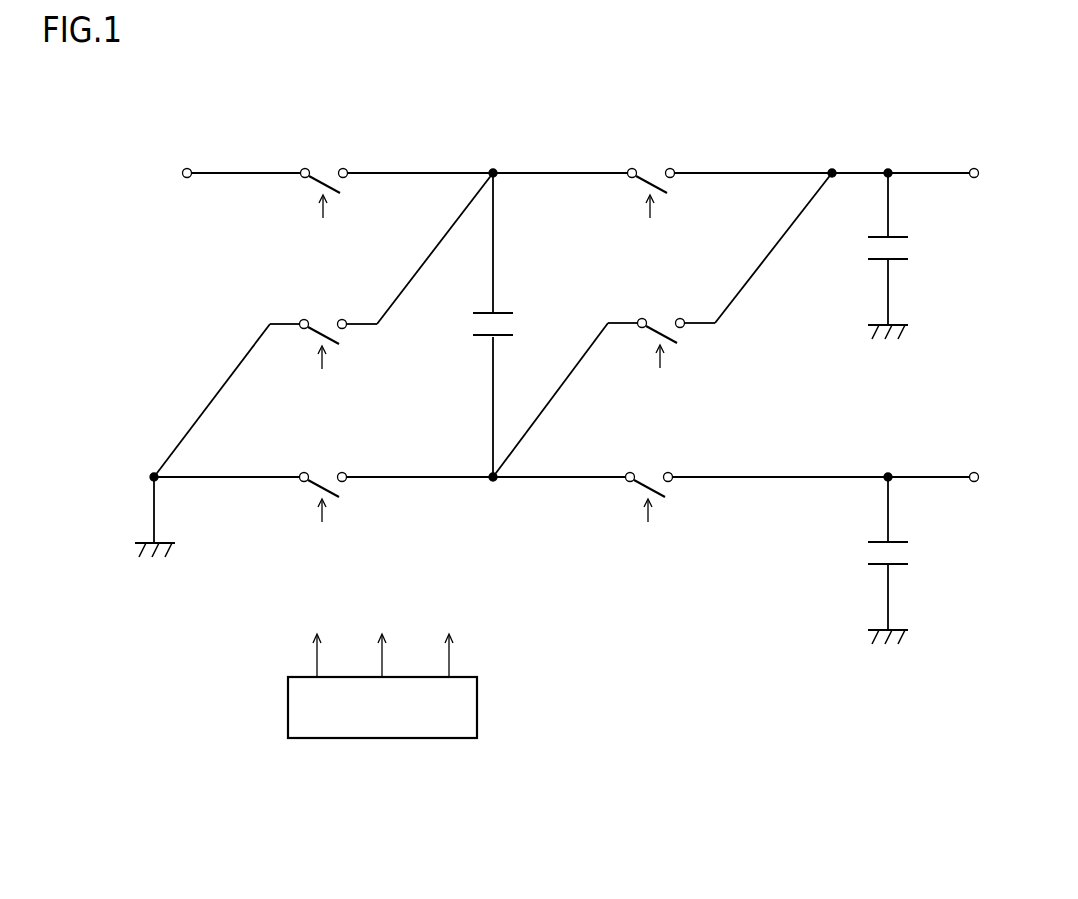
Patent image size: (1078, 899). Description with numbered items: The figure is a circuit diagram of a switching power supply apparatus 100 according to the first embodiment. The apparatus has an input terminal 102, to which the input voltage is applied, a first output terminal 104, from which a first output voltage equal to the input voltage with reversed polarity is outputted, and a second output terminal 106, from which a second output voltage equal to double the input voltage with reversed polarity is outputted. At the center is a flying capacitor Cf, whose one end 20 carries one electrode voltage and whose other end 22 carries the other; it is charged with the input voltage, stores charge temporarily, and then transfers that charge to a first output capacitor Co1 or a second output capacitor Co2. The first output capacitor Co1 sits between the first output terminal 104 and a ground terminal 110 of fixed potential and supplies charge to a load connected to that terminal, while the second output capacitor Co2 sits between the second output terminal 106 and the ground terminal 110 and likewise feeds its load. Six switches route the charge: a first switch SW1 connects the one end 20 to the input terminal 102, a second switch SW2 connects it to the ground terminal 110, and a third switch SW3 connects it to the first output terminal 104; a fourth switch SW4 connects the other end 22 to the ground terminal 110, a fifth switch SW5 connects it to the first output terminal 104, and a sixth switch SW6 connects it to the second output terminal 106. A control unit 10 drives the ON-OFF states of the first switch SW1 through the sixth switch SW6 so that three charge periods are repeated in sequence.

The switching power supply apparatus 100 is at (546, 871).
The control unit 10 is at (325, 740).
The one end of the flying capacitor 20 is at (491, 288).
The other end of the flying capacitor 22 is at (492, 358).
The input terminal 102 is at (184, 169).
The first output terminal 104 is at (976, 169).
The second output terminal 106 is at (976, 473).
The ground terminal 110 is at (130, 545).
The first switch SW1 is at (326, 170).
The second switch SW2 is at (325, 321).
The third switch SW3 is at (652, 171).
The fourth switch SW4 is at (325, 474).
The fifth switch SW5 is at (663, 321).
The sixth switch SW6 is at (650, 474).
The flying capacitor Cf is at (511, 327).
The first output capacitor Co1 is at (906, 252).
The second output capacitor Co2 is at (906, 557).